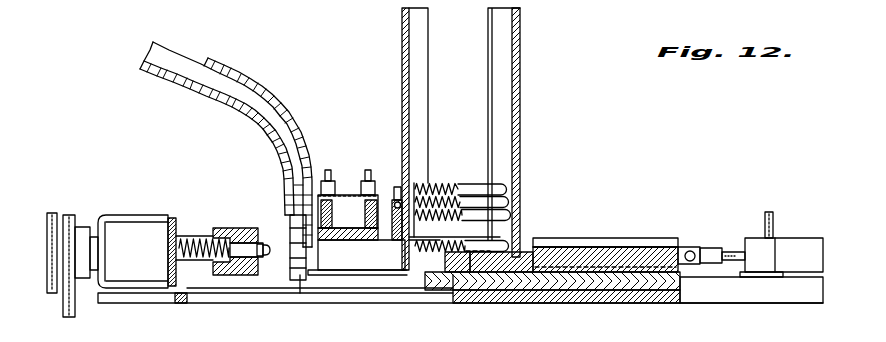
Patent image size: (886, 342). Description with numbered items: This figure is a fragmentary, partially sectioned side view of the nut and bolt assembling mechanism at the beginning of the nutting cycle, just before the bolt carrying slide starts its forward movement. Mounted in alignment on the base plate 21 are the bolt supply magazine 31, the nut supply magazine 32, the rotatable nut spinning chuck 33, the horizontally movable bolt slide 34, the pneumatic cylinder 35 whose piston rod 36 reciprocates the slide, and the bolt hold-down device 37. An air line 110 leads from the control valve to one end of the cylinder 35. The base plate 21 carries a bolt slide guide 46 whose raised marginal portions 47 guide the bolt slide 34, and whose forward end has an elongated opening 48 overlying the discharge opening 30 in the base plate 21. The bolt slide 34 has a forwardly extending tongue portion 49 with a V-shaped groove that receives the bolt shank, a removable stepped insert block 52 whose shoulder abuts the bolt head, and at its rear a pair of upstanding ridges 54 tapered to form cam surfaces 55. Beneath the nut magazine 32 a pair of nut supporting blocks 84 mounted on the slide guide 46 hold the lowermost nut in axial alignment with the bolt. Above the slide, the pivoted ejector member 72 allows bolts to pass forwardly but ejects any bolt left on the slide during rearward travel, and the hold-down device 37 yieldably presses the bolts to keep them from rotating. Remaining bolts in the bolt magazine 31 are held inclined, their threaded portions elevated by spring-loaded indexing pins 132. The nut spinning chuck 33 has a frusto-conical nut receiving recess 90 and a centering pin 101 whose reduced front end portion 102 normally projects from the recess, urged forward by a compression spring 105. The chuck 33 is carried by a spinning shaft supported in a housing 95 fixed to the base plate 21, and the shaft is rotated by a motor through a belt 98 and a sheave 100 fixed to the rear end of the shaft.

The sheave 100 is at (53, 213).
The belt 98 is at (71, 215).
The housing 95 is at (124, 261).
The compression spring 105 is at (197, 238).
The nut spinning chuck 33 is at (236, 230).
The nut receiving frusto-conical recess 90 is at (266, 244).
The centering pin 101 is at (243, 276).
The reduced front end portion 102 is at (259, 258).
The discharge opening 30 is at (221, 296).
The elongated centrally positioned opening 48 is at (378, 283).
The nut supply magazine 32 is at (322, 128).
The nut supporting blocks 84 is at (300, 282).
The bolt hold-down device 37 is at (338, 223).
The ejector member 72 is at (390, 236).
The bolt supply magazine 31 is at (552, 108).
The indexing pins 132 is at (427, 252).
The tongue portion 49 is at (462, 272).
The stepped insert block 52 is at (517, 262).
The bolt slide guide 46 is at (612, 279).
The base plate 21 is at (673, 290).
The bolt slide 34 is at (660, 260).
The upstanding ridges 54 is at (628, 246).
The cam surfaces 55 is at (586, 240).
The raised marginal portions 47 is at (553, 268).
The piston rod 36 is at (729, 252).
The pneumatic cylinder 35 is at (798, 259).
The air line 110 is at (772, 216).